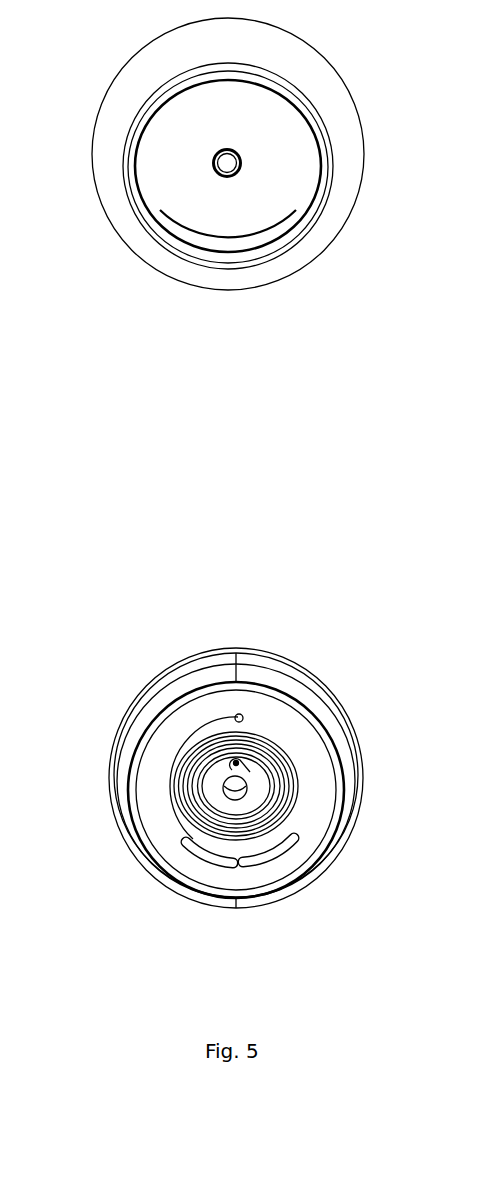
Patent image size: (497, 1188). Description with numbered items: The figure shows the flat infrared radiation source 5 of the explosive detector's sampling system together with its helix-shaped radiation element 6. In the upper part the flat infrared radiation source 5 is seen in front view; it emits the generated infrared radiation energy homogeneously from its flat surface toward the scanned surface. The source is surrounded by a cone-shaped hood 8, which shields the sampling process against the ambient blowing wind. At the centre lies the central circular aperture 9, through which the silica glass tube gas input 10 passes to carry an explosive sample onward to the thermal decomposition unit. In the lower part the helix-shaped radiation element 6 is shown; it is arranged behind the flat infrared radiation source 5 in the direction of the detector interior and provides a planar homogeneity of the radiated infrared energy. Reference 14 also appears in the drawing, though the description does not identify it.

The flat infrared radiation source 5 is at (193, 178).
The helix-shaped radiation element 6 is at (228, 870).
The cone-shaped hood 8 is at (320, 82).
The central circular aperture 9 is at (250, 788).
The silica glass tube gas input 10 is at (229, 165).
The inner rim 14 is at (124, 180).